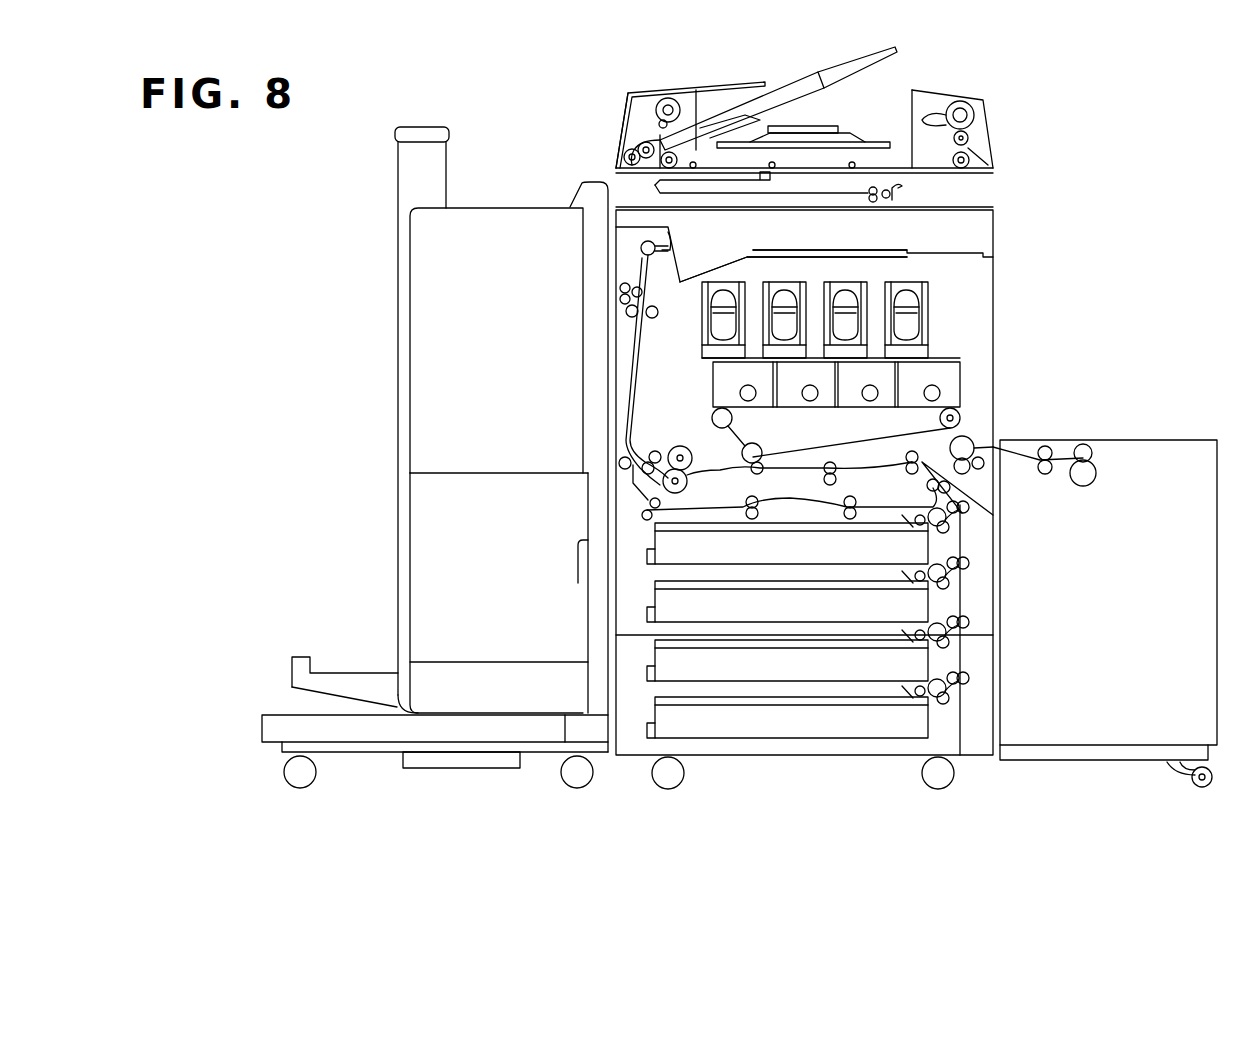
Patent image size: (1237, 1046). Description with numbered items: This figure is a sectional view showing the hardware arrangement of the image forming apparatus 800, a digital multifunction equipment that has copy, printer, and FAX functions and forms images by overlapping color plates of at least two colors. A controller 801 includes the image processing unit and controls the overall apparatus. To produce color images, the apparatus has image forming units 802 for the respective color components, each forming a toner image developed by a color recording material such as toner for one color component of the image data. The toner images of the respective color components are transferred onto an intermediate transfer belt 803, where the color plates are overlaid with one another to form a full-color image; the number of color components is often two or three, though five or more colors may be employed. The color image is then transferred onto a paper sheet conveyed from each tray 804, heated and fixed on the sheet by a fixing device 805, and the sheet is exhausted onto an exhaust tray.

The image forming apparatus 800 is at (617, 796).
The controller 801 is at (890, 258).
The image forming units 802 is at (756, 390).
The intermediate transfer belt 803 is at (960, 413).
The tray 804 is at (813, 548).
The fixing device 805 is at (680, 458).